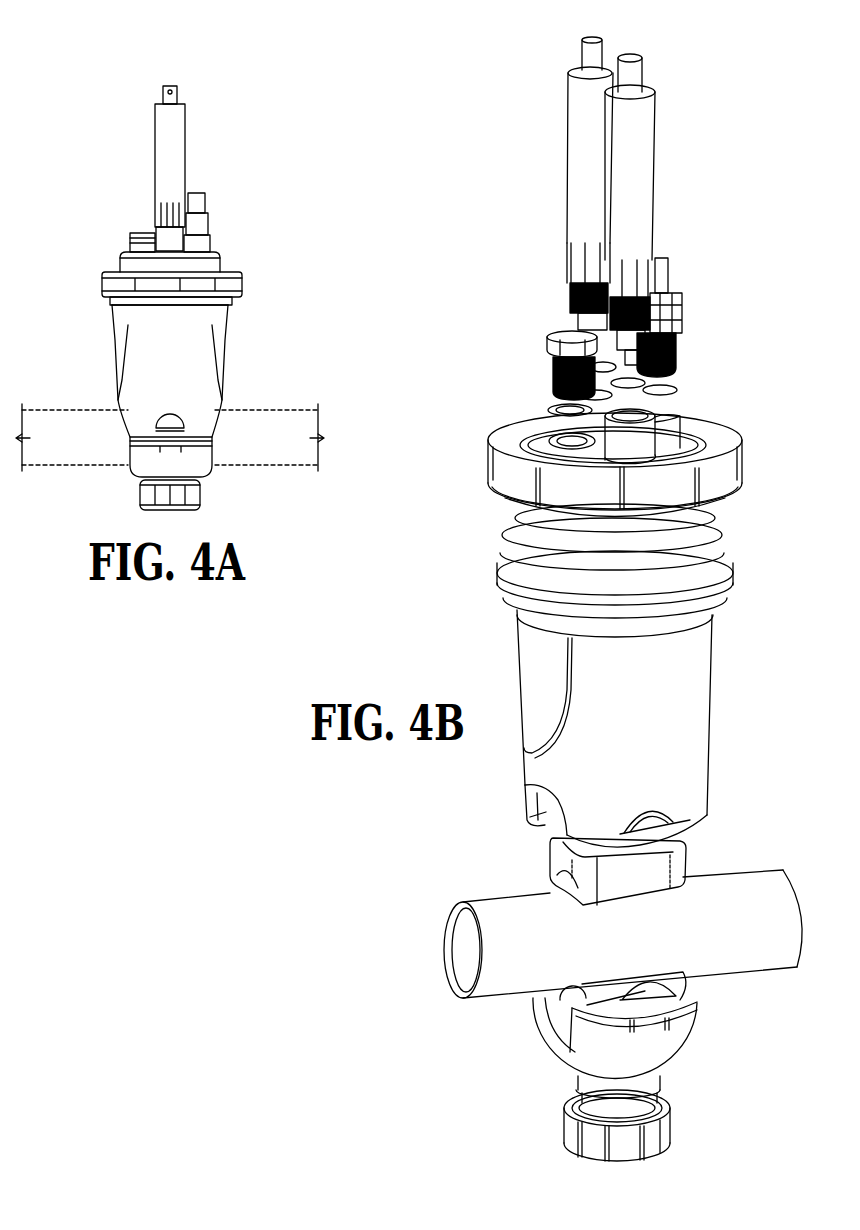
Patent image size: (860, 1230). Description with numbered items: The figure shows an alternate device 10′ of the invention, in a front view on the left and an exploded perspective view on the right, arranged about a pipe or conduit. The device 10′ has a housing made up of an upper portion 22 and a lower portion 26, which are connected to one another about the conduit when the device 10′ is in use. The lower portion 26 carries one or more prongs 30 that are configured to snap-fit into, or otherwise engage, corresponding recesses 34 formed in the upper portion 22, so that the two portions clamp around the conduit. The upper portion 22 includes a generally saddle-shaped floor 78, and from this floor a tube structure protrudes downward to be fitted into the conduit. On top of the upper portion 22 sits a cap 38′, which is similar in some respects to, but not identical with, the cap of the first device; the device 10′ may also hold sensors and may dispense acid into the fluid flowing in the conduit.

In FIG. 4A, the alternate device 10′ is at (343, 218).
In FIG. 4B, the alternate device 10′ is at (703, 127).
In FIG. 4A, the cap 38′ is at (215, 252).
In FIG. 4B, the cap 38′ is at (717, 423).
In FIG. 4B, the upper portion 22 is at (712, 733).
In FIG. 4B, the saddle-shaped floor 78 is at (530, 817).
In FIG. 4B, the recess 34 is at (690, 818).
In FIG. 4B, the prong 30 is at (700, 995).
In FIG. 4B, the lower portion 26 is at (685, 1052).